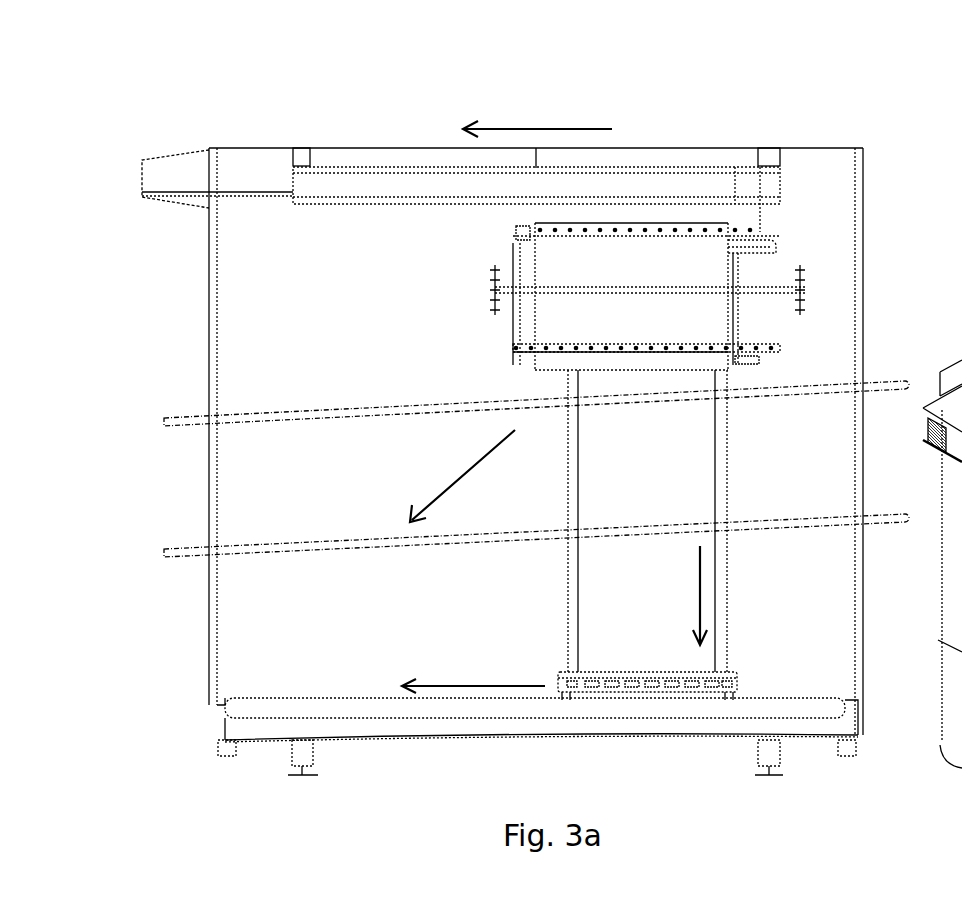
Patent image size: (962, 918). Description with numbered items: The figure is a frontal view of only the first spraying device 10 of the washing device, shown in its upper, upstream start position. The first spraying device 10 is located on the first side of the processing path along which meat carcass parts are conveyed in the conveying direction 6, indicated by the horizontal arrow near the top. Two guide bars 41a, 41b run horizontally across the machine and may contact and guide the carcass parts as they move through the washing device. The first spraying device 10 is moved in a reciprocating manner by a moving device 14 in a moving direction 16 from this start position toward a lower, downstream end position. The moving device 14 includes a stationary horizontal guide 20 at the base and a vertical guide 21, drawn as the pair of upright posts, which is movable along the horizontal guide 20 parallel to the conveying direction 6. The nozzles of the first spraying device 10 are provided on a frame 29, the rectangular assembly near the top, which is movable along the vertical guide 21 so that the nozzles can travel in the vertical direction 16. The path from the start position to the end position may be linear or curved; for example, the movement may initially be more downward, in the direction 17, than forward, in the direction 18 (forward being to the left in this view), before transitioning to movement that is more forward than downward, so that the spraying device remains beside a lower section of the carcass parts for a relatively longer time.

The conveying direction 6 is at (507, 128).
The first spraying device 10 is at (458, 234).
The moving device 14 is at (540, 645).
The moving direction 16 is at (450, 482).
The downward direction 17 is at (701, 576).
The forward direction 18 is at (447, 688).
The horizontal guide 20 is at (806, 706).
The vertical guide 21 is at (578, 460).
The frame 29 is at (707, 323).
The guide bar 41a is at (270, 417).
The guide bar 41b is at (243, 551).